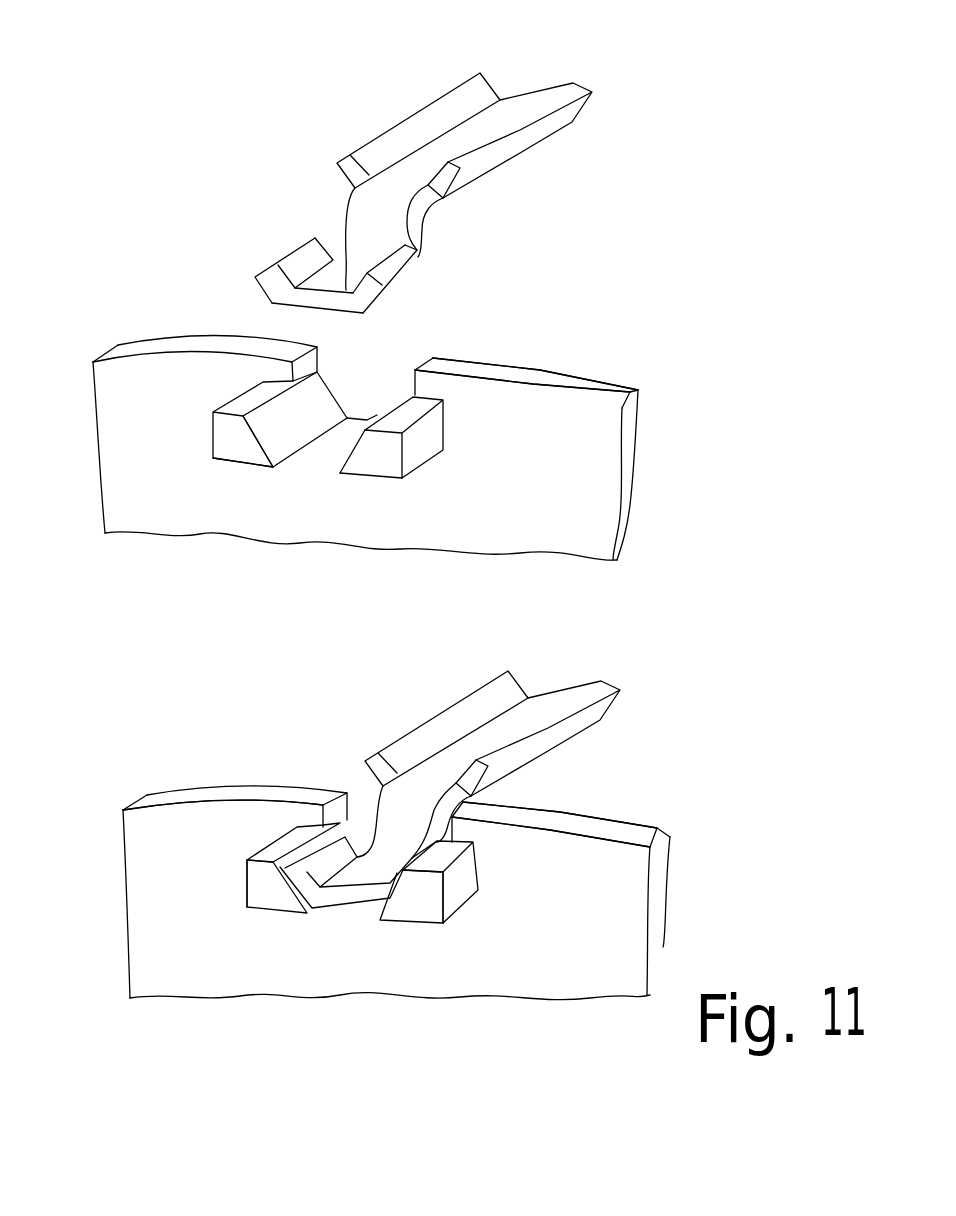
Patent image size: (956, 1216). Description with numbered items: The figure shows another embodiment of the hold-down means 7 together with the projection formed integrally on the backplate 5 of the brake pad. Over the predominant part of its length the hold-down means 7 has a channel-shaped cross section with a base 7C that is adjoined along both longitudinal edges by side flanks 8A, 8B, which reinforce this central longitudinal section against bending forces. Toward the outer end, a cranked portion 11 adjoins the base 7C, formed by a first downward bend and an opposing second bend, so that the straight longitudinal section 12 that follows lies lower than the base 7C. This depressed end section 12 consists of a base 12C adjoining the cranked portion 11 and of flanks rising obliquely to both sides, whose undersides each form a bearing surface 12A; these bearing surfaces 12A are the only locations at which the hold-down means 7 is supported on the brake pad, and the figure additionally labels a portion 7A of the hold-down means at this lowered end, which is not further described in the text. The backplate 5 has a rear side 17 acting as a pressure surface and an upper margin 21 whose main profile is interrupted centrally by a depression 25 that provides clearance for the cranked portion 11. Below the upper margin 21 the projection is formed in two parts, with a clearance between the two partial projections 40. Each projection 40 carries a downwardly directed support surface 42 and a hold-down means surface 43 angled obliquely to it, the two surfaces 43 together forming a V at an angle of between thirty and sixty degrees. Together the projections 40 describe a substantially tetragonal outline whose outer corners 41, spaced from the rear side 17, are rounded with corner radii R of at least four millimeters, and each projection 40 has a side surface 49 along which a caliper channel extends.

The backplate 5 is at (417, 645).
The hold-down means 7 is at (552, 148).
The clip base portion 7A is at (345, 907).
The base 7C is at (448, 143).
The side flank 8A is at (505, 124).
The side flank 8B is at (388, 145).
The cranked portion 11 is at (423, 226).
The straight longitudinal section 12 is at (328, 287).
The bearing surface 12A is at (265, 280).
The base 12C is at (343, 286).
The rear side 17 is at (590, 518).
The upper margin 21 is at (457, 366).
The depression 25 is at (363, 418).
The projection 40 is at (237, 445).
The outer corner 41 is at (243, 880).
The support surface 42 is at (243, 460).
The hold-down means surface 43 is at (283, 426).
The side surface 49 is at (458, 432).
The corner radius R is at (238, 892).